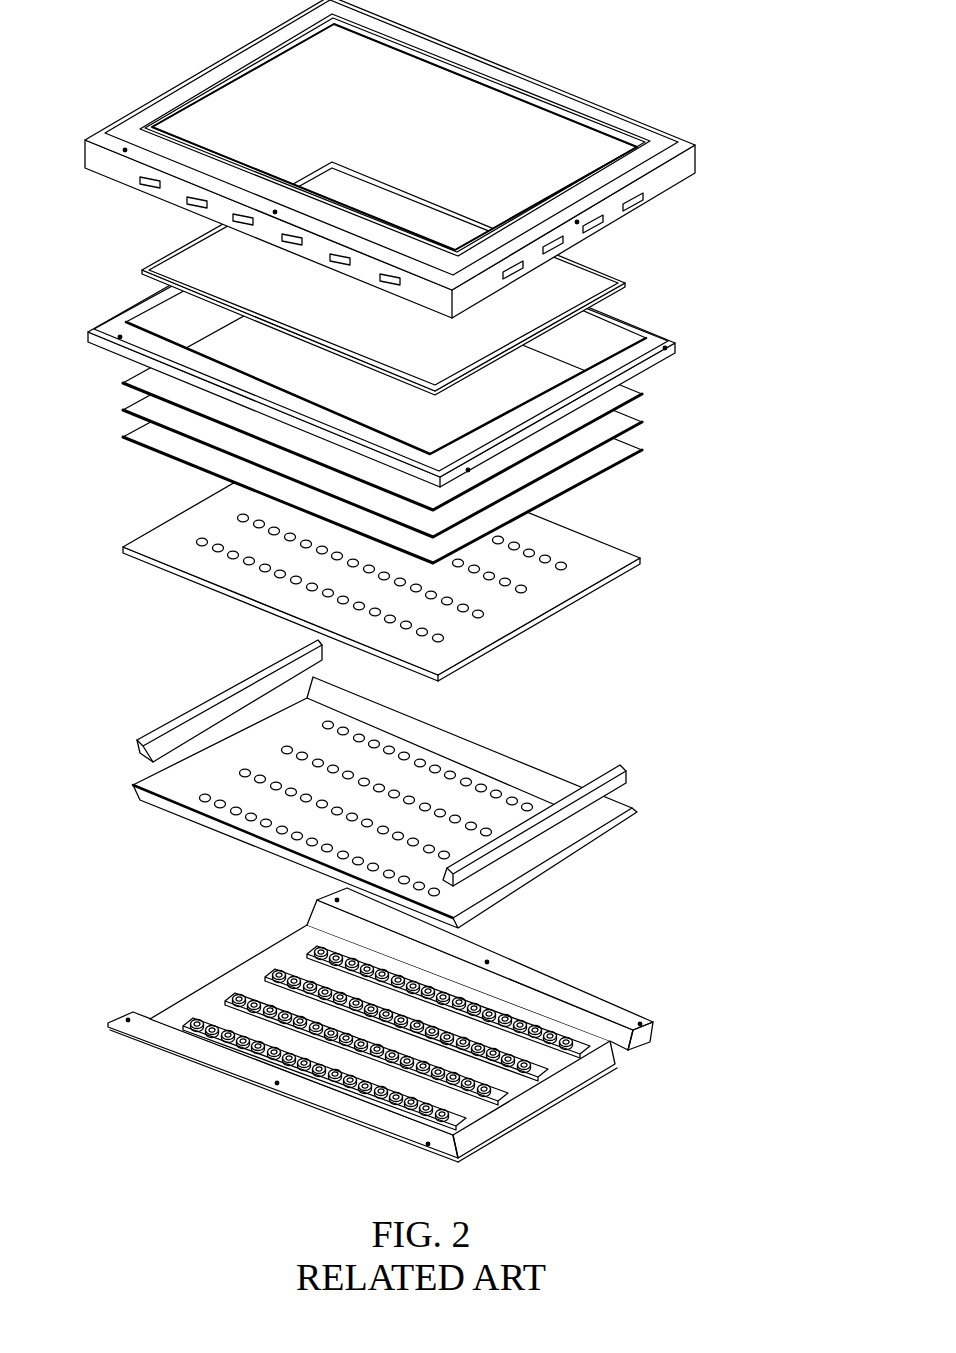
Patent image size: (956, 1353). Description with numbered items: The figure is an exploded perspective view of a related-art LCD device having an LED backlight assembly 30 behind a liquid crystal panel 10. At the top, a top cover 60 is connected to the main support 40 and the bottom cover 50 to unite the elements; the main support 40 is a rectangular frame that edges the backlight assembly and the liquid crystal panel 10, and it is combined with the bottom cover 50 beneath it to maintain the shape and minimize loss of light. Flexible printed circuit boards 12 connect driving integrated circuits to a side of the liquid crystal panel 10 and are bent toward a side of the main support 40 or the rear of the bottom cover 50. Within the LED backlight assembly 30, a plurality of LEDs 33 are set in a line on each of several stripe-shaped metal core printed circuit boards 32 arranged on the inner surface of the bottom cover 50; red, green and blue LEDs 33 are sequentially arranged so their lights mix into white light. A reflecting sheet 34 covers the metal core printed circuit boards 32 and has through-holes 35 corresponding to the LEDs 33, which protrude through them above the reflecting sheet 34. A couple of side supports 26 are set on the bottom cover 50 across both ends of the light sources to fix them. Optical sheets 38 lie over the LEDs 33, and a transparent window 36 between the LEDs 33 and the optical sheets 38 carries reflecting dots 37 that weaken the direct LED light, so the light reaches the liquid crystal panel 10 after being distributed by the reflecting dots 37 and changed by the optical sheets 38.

The liquid crystal panel 10 is at (441, 581).
The flexible printed circuit boards 12 is at (582, 262).
The side supports 26 is at (207, 717).
The LED backlight assembly 30 is at (442, 680).
The metal core printed circuit boards 32 is at (417, 1025).
The LEDs 33 is at (533, 1023).
The reflecting sheet 34 is at (385, 802).
The through-holes 35 is at (395, 752).
The transparent window 36 is at (403, 555).
The reflecting dots 37 is at (522, 592).
The optical sheets 38 is at (668, 380).
The main support 40 is at (420, 342).
The bottom cover 50 is at (630, 1047).
The top cover 60 is at (695, 163).